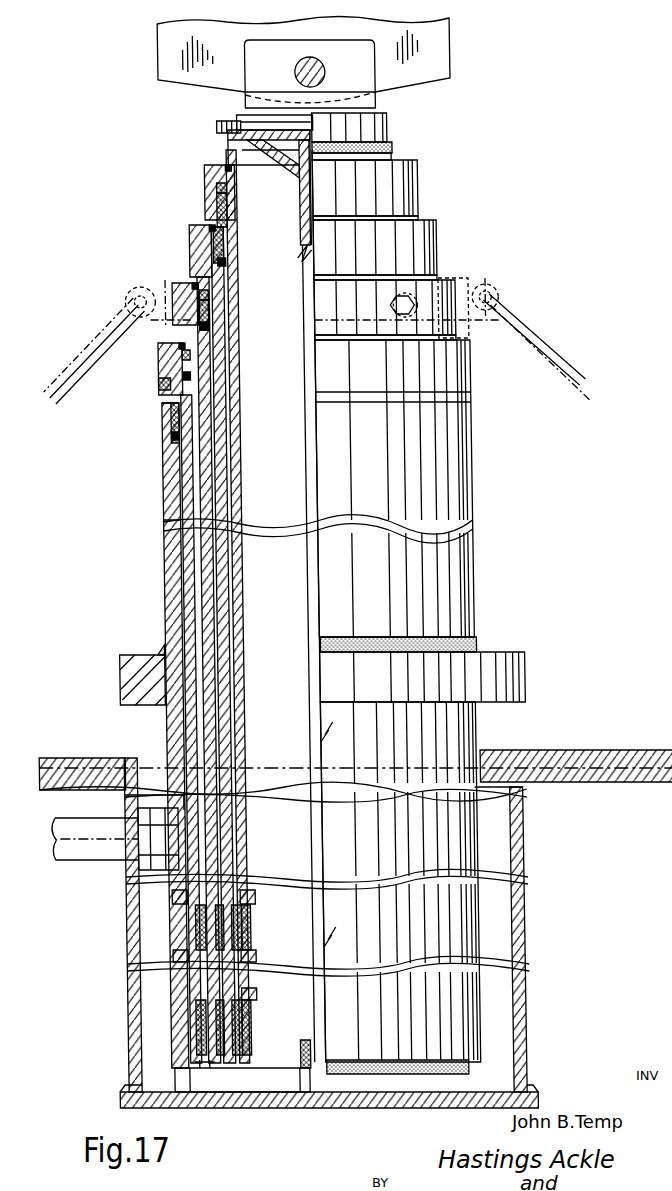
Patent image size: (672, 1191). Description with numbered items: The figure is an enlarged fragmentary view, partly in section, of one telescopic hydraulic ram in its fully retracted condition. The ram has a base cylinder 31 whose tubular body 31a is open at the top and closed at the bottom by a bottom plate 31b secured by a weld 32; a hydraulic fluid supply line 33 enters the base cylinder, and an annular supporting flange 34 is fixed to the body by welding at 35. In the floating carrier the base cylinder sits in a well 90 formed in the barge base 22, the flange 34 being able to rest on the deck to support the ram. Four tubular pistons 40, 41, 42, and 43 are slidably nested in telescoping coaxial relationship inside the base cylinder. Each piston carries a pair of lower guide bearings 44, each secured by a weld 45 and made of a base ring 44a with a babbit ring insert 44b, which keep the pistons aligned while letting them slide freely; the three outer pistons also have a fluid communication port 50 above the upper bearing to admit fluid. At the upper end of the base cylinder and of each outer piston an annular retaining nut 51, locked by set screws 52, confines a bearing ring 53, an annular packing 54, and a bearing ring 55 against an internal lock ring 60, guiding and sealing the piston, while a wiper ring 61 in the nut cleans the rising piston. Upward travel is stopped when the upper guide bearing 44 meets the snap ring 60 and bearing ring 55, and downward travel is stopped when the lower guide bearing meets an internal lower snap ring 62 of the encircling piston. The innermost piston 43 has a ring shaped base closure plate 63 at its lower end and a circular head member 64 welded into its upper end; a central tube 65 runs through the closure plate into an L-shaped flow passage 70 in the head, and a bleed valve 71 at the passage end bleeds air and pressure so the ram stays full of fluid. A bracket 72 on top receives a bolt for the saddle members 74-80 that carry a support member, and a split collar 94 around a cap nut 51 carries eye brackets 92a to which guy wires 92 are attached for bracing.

The saddle members 74-80 is at (458, 48).
The bracket 72 is at (378, 100).
The L-shaped flow passage 70 is at (246, 111).
The bleed valve 71 is at (222, 127).
The circular head member 64 is at (251, 145).
The central tube 65 is at (306, 410).
The weld 32 is at (400, 1068).
The split collar 94 is at (463, 280).
The eye brackets 92a is at (498, 282).
The guy wires 92 is at (553, 332).
The innermost piston 43 is at (236, 618).
The tubular piston 42 is at (221, 640).
The tubular piston 41 is at (206, 662).
The tubular piston 40 is at (193, 705).
The base cylinder 31 is at (164, 580).
The tubular body 31a is at (163, 563).
The annular retaining nut 51 is at (209, 172).
The internal wiper ring 61 is at (230, 168).
The bearing ring 53 is at (231, 188).
The annular packing 54 is at (231, 205).
The bearing ring 55 is at (229, 240).
The internal lock ring 60 is at (229, 262).
The set screws 52 is at (160, 385).
The annular supporting flange 34 is at (117, 678).
The weld 35 is at (157, 650).
The floatable barge base 22 is at (610, 748).
The well 90 is at (520, 940).
The hydraulic fluid supply line 33 is at (55, 862).
The fluid communication port 50 is at (166, 897).
The guide bearings 44 is at (189, 915).
The base ring 44a is at (274, 1020).
The ring insert 44b is at (274, 1003).
The weld 45 is at (166, 955).
The bottom plate 31b is at (249, 1090).
The internal lower snap ring 62 is at (196, 1068).
The ring shaped base closure plate 63 is at (292, 1060).